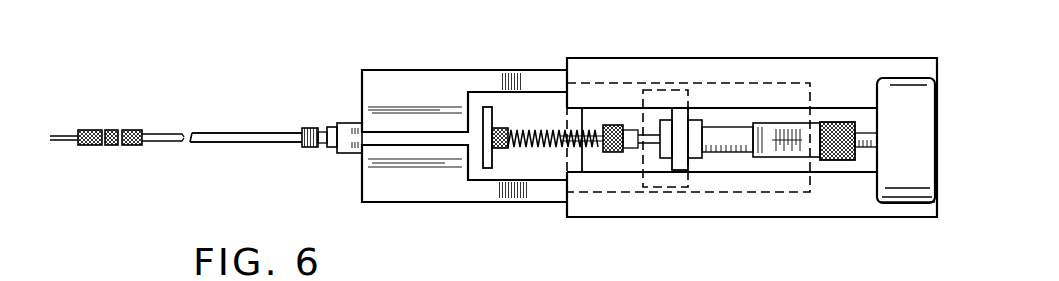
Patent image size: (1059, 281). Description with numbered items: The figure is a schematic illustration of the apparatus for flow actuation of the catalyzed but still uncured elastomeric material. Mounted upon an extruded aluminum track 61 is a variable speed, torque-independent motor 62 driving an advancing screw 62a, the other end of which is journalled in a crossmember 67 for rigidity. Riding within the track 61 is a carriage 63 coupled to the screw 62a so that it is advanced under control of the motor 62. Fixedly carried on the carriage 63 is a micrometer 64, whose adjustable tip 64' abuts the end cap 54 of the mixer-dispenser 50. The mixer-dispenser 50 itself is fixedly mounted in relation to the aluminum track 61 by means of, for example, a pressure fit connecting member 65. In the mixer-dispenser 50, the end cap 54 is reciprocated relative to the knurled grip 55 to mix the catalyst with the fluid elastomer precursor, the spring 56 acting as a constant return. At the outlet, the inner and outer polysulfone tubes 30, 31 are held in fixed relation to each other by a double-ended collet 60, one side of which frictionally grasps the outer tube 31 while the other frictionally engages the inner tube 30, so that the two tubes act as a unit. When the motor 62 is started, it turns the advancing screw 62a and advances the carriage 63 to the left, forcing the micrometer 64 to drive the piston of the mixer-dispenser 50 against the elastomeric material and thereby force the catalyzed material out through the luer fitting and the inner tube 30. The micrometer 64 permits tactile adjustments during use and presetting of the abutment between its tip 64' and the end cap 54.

The double-ended collet 60 is at (98, 130).
The inner polysulfone tube 30 is at (246, 137).
The outer polysulfone tube 31 is at (200, 133).
The mixer-dispenser 50 is at (367, 140).
The pressure fit connecting member 65 is at (467, 190).
The knurled grip 55 is at (495, 128).
The spring 56 is at (537, 130).
The extruded aluminum track 61 is at (832, 202).
The crossmember 67 is at (567, 163).
The end cap 54 is at (613, 150).
The adjustable tip of micrometer 64' is at (645, 88).
The carriage 63 is at (677, 172).
The micrometer 64 is at (707, 91).
The advancing screw 62a is at (868, 135).
The variable speed, torque-independent motor 62 is at (907, 98).